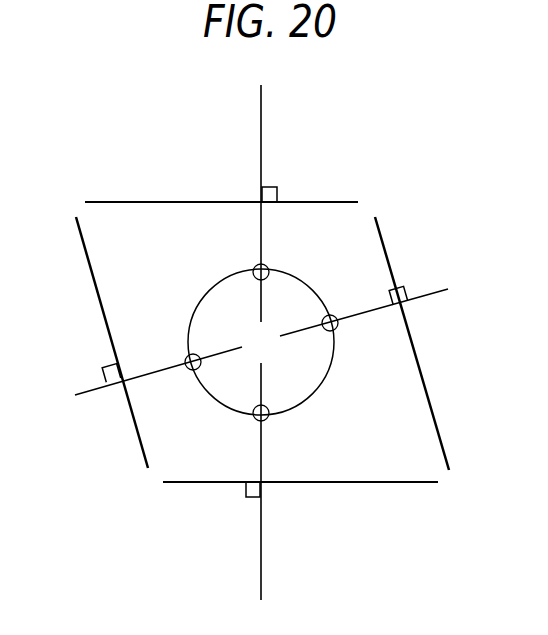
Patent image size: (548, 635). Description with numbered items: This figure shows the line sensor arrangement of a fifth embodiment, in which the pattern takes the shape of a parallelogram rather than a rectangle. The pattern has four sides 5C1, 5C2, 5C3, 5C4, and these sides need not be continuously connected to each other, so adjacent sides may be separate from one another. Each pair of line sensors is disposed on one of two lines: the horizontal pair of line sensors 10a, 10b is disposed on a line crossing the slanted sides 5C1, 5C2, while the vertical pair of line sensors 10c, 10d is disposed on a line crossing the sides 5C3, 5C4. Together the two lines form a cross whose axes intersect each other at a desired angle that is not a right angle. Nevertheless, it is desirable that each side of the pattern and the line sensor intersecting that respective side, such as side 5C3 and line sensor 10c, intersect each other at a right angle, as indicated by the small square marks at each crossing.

The side of the pattern 5C1 is at (95, 288).
The side of the pattern 5C2 is at (433, 417).
The side of the pattern 5C3 is at (325, 202).
The side of the pattern 5C4 is at (357, 482).
The line sensor 10a is at (87, 391).
The line sensor 10b is at (430, 295).
The line sensor 10c is at (261, 124).
The line sensor 10d is at (261, 559).